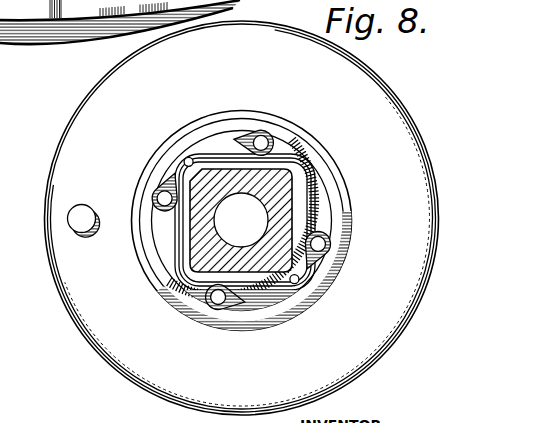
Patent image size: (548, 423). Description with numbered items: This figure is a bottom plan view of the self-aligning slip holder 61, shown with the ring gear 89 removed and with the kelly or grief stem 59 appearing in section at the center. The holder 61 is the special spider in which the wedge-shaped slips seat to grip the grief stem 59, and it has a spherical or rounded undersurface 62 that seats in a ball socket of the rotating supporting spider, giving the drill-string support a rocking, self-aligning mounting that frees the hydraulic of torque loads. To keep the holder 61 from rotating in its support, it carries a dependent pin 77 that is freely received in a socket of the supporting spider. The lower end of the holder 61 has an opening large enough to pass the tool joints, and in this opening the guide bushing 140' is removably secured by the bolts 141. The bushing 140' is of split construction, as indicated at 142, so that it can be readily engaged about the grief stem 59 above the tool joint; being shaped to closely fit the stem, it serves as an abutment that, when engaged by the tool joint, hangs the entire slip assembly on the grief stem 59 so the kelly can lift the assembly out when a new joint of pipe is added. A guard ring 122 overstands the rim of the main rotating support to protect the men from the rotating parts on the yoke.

The kelly or grief stem 59 is at (294, 177).
The self-aligning slip holder 61 is at (64, 130).
The spherical or rounded undersurface 62 is at (90, 307).
The dependent pin 77 is at (71, 224).
The ring gear 89 is at (11, 8).
The guard ring 122 is at (80, 0).
The guide bushing 140' is at (263, 240).
The bolts 141 is at (157, 198).
The split 142 is at (192, 164).